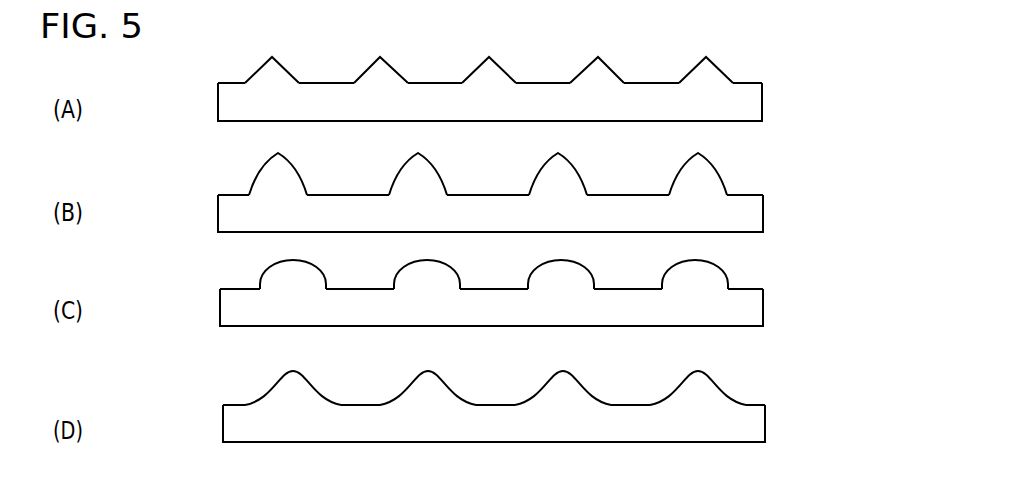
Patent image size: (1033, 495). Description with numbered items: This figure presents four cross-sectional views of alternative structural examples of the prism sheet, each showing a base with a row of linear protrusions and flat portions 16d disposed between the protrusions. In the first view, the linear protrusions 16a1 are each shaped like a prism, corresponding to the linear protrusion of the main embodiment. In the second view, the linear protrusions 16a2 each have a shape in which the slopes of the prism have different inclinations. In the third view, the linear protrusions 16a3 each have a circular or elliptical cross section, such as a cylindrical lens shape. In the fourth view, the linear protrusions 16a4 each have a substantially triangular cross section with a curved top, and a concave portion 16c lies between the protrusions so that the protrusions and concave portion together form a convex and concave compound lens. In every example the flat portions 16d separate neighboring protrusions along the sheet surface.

The flat portion 16d is at (537, 82).
The linear protrusion 16a1 is at (615, 72).
The linear protrusion 16a2 is at (580, 180).
The linear protrusion 16a3 is at (588, 267).
The linear protrusion 16a4 is at (567, 375).
The concave portion 16c is at (668, 398).